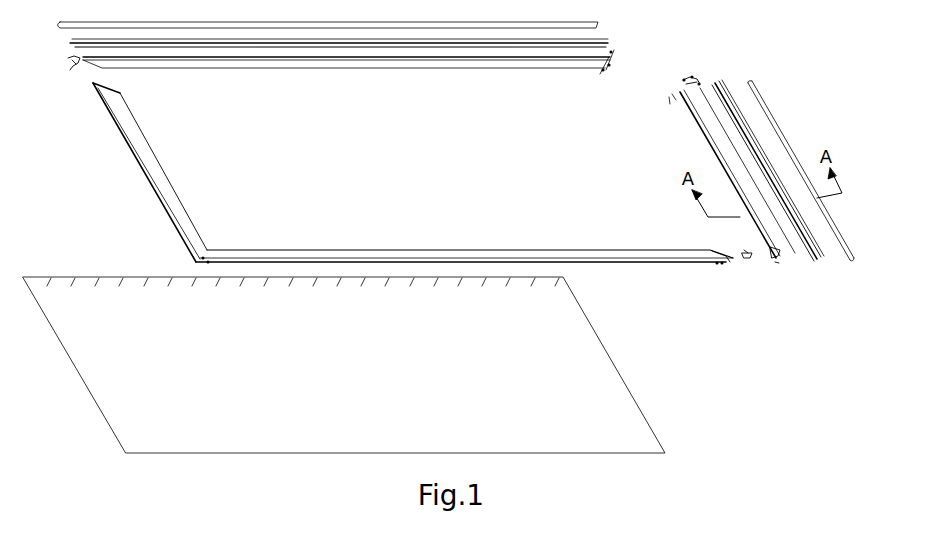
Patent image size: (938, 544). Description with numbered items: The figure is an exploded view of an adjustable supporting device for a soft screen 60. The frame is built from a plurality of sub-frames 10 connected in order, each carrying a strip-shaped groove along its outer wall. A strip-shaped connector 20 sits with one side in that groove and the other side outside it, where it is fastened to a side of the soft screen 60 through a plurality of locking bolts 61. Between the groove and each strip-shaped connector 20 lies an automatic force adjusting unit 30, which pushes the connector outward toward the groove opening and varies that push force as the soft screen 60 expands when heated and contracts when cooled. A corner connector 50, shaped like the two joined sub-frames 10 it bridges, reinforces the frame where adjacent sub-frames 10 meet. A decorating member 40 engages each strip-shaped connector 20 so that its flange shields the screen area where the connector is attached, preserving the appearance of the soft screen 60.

The sub-frame 10 is at (700, 147).
The strip-shaped connector 20 is at (743, 128).
The automatic force adjusting unit 30 is at (760, 190).
The decorating member 40 is at (835, 228).
The corner connector 50 is at (693, 80).
The soft screen 60 is at (610, 385).
The locking bolt 61 is at (312, 283).